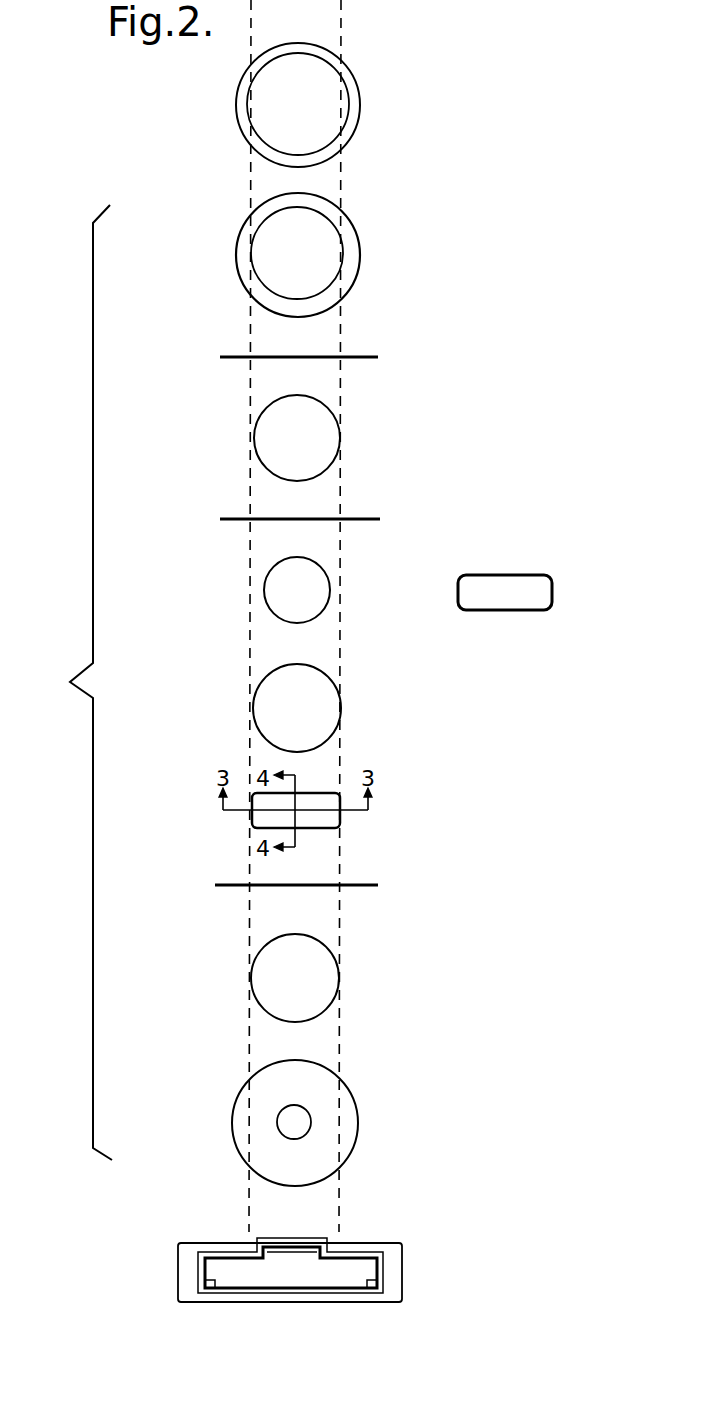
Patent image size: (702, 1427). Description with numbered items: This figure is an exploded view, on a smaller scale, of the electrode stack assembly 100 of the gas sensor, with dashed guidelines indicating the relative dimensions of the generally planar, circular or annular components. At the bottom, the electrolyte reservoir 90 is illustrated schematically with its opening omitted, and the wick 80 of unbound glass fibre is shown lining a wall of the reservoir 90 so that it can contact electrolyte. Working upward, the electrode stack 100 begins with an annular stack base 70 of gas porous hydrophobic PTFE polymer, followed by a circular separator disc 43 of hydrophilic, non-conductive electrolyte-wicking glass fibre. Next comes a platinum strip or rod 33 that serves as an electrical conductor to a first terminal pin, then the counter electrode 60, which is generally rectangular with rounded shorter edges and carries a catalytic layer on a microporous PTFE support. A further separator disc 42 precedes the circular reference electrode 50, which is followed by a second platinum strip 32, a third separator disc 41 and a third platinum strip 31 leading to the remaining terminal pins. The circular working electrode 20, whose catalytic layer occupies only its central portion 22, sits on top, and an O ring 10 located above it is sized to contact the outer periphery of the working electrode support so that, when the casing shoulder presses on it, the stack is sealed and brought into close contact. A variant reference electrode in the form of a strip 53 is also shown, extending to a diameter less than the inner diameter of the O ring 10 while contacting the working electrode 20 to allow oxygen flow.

The "O" ring 10 is at (237, 108).
The working electrode 20 is at (237, 255).
The inner opening of gasket 22 is at (330, 253).
The third platinum strip 31 is at (220, 355).
The second platinum strip 32 is at (220, 519).
The platinum strip or rod 33 is at (215, 885).
The third separator disc 41 is at (254, 446).
The further separator disc 42 is at (253, 708).
The circular separator disc 43 is at (252, 978).
The reference electrode 50 is at (264, 590).
The strip 53 is at (521, 575).
The counter electrode 60 is at (252, 822).
The annular stack base 70 is at (232, 1125).
The wick 80 is at (213, 1258).
The electrolyte reservoir 90 is at (178, 1275).
The electrode stack assembly 100 is at (67, 682).